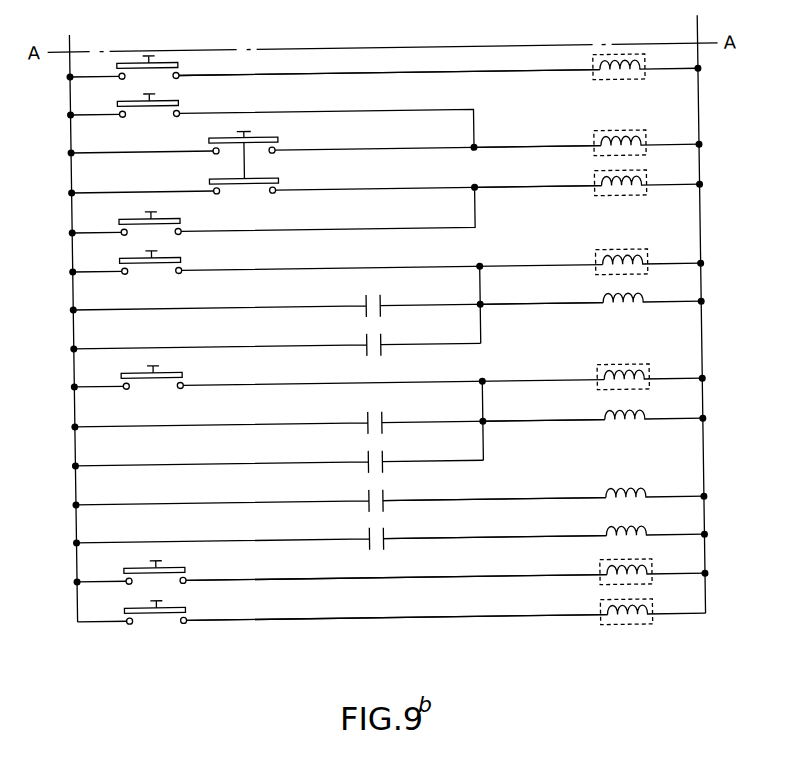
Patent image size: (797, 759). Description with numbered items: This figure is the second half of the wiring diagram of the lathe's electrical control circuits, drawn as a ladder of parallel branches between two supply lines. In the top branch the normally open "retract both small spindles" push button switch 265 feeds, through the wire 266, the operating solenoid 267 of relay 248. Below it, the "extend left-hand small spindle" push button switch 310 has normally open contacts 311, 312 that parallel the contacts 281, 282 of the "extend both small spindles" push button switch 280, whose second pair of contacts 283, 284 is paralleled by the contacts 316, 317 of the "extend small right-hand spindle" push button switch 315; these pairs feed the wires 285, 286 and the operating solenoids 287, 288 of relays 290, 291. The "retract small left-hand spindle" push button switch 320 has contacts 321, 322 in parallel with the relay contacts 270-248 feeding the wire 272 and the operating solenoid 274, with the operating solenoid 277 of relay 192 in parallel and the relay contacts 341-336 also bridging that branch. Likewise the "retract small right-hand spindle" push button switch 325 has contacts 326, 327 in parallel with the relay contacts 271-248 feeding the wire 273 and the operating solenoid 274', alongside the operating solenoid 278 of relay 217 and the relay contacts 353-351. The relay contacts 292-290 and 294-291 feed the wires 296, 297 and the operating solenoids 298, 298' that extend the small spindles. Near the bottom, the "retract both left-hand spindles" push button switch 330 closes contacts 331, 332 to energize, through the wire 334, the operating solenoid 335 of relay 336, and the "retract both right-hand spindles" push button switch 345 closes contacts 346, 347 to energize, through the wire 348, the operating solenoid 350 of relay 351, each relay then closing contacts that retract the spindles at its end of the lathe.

The retract both small spindles push button switch 265 is at (153, 57).
The wire 266 is at (478, 70).
The operating solenoid of relay 248 267 is at (598, 62).
The relay 248 is at (645, 59).
The extend left-hand small spindle push button switch 310 is at (153, 95).
The normally open contact of switch 310 311 is at (121, 118).
The normally open contact of switch 310 312 is at (176, 118).
The extend both small spindles push button switch 280 is at (250, 134).
The normally open contact of switch 280 281 is at (214, 156).
The normally open contact of switch 280 282 is at (272, 156).
The normally open contact of switch 280 283 is at (215, 196).
The normally open contact of switch 280 284 is at (272, 196).
The wire 285 is at (529, 146).
The operating solenoid of relay 290 287 is at (599, 144).
The relay 290 is at (645, 140).
The wire 286 is at (529, 186).
The operating solenoid of relay 291 288 is at (599, 186).
The relay 291 is at (645, 180).
The extend small right-hand spindle push button switch 315 is at (149, 213).
The normally open contact of switch 315 316 is at (122, 236).
The normally open contact of switch 315 317 is at (177, 236).
The retract small left-hand spindle push button switch 320 is at (155, 252).
The normally open contact of switch 320 321 is at (122, 275).
The normally open contact of switch 320 322 is at (177, 275).
The operating solenoid of relay 192 277 is at (599, 260).
The relay 192 is at (645, 258).
The normally open contacts 270 of relay 248 270-248 is at (376, 301).
The wire 272 is at (535, 300).
The operating solenoid of valve 136 274 is at (631, 286).
The normally open contacts 341 of relay 336 341-336 is at (376, 339).
The retract small right-hand spindle push button switch 325 is at (153, 367).
The normally open contact of switch 325 326 is at (122, 390).
The normally open contact of switch 325 327 is at (177, 390).
The operating solenoid of relay 217 278 is at (599, 380).
The relay 217 is at (645, 372).
The normally open contacts 271 of relay 248 271-248 is at (376, 416).
The wire 273 is at (547, 416).
The operating solenoid of valve 136' 274' is at (633, 402).
The normally open contacts 353 of relay 351 353-351 is at (376, 455).
The normally open contacts 292 of relay 290 292-290 is at (376, 493).
The wire 296 is at (544, 491).
The operating solenoid of valve 136 298 is at (640, 478).
The normally open contacts 294 of relay 291 294-291 is at (376, 531).
The wire 297 is at (541, 536).
The operating solenoid of valve 136' 298' is at (642, 518).
The retract both left-hand spindles push button switch 330 is at (153, 562).
The normally open contact of switch 330 331 is at (121, 586).
The normally open contact of switch 330 332 is at (177, 585).
The wire 334 is at (533, 574).
The operating solenoid of relay 336 335 is at (599, 578).
The relay 336 is at (645, 568).
The retract both right-hand spindles push button switch 345 is at (155, 602).
The normally open contact of switch 345 346 is at (122, 625).
The normally open contact of switch 345 347 is at (177, 625).
The wire 348 is at (528, 612).
The operating solenoid of relay 351 350 is at (599, 615).
The relay 351 is at (651, 600).